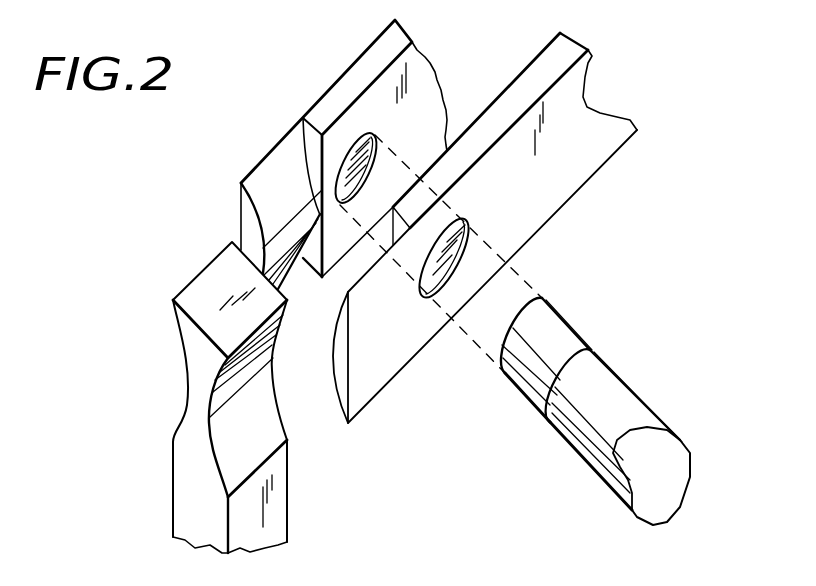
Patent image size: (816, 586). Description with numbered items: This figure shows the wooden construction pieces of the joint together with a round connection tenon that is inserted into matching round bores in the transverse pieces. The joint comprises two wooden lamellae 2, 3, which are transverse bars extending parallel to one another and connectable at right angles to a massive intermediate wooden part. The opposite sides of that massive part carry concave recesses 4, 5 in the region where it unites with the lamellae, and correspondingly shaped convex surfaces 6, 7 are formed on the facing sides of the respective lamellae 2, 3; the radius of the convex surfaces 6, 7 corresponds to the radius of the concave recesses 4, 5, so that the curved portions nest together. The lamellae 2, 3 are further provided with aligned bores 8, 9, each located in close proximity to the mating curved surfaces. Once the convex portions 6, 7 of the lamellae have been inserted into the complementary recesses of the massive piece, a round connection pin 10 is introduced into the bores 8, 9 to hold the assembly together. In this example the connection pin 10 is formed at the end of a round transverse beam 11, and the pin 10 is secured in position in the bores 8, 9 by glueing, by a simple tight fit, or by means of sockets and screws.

The wooden lamella 2 is at (343, 88).
The wooden lamella 3 is at (573, 175).
The concave recess 4 is at (188, 383).
The concave recess 5 is at (262, 418).
The convex surface 6 is at (272, 167).
The convex surface 7 is at (203, 283).
The bore 8 is at (368, 146).
The bore 9 is at (470, 228).
The round connection pin 10 is at (555, 332).
The transverse beam 11 is at (638, 417).